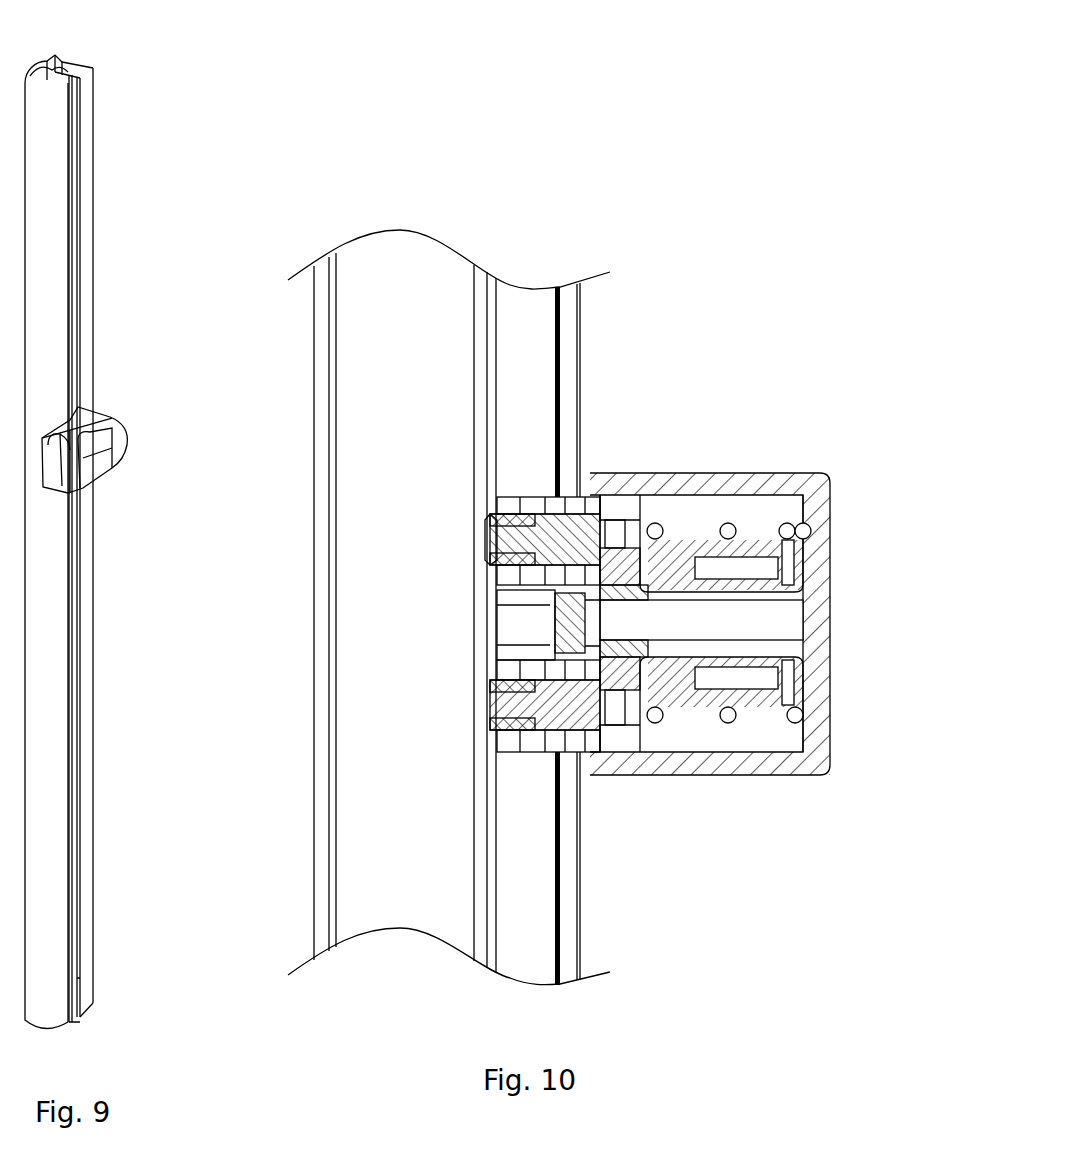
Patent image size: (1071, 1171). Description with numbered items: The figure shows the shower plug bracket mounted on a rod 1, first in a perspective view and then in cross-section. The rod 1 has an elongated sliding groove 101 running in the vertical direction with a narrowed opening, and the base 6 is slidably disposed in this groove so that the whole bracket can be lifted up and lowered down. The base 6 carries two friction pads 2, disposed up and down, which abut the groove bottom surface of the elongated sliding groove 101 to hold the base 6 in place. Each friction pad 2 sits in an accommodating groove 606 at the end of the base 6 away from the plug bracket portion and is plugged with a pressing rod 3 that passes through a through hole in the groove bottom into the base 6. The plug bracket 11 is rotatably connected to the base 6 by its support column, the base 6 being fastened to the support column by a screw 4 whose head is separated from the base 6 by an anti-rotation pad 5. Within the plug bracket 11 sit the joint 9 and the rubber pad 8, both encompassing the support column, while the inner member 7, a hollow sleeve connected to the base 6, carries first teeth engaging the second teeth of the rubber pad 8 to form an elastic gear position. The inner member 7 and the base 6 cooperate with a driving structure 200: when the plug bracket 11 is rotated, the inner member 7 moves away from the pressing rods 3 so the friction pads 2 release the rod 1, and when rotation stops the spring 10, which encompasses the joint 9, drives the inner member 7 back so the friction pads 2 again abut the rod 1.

In FIG. 9, the rod 1 is at (90, 272).
In FIG. 10, the rod 1 is at (497, 296).
In FIG. 9, the elongated sliding groove 101 is at (93, 68).
In FIG. 9, the plug bracket 11 is at (100, 420).
In FIG. 10, the plug bracket 11 is at (808, 556).
In FIG. 10, the friction pad 2 is at (488, 513).
In FIG. 10, the pressing rod 3 is at (495, 538).
In FIG. 10, the screw 4 is at (520, 618).
In FIG. 10, the anti-rotation pad 5 is at (555, 648).
In FIG. 10, the base 6 is at (610, 474).
In FIG. 10, the accommodating groove 606 is at (544, 456).
In FIG. 10, the inner member 7 is at (655, 477).
In FIG. 10, the rubber pad 8 is at (690, 480).
In FIG. 10, the joint 9 is at (740, 478).
In FIG. 10, the spring 10 is at (828, 496).
In FIG. 10, the driving structure 200 is at (634, 470).